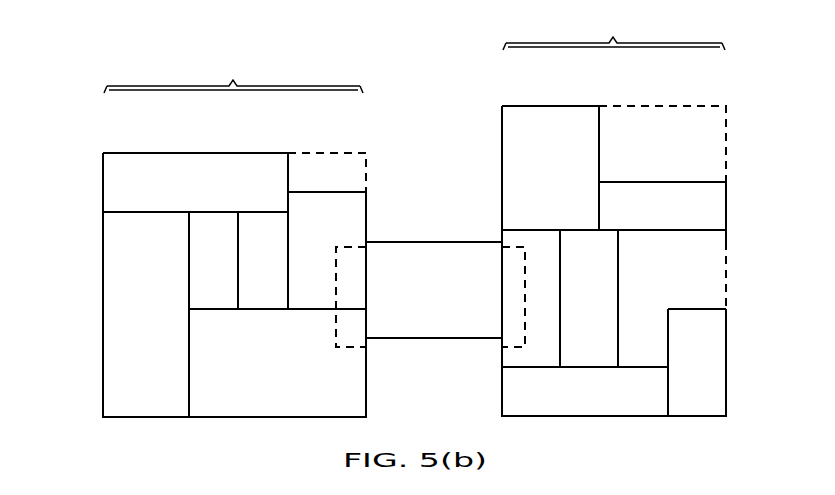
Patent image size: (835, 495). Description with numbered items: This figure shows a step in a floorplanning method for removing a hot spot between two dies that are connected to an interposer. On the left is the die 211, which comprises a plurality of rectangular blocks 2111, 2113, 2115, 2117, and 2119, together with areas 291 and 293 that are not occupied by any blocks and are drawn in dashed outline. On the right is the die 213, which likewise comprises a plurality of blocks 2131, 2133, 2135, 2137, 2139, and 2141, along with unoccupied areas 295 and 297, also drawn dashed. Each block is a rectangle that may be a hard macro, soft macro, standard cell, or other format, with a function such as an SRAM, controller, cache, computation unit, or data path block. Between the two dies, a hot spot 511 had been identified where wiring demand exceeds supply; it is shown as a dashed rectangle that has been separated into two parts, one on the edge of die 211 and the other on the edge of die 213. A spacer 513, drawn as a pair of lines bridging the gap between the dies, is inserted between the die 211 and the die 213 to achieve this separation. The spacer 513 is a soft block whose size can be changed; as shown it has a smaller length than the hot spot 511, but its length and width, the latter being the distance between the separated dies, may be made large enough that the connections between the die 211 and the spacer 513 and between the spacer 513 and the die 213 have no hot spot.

The die 211 is at (234, 235).
The die 213 is at (614, 214).
The block 2111 is at (110, 329).
The block 2113 is at (243, 410).
The block 2115 is at (215, 218).
The block 2117 is at (148, 160).
The block 2119 is at (310, 302).
The area 291 is at (253, 302).
The area 293 is at (324, 160).
The hot spot 511 is at (338, 240).
The spacer 513 is at (432, 248).
The block 2131 is at (595, 410).
The block 2133 is at (718, 364).
The block 2135 is at (532, 238).
The block 2137 is at (613, 276).
The block 2139 is at (552, 112).
The block 2141 is at (718, 206).
The area 295 is at (718, 270).
The area 297 is at (665, 112).